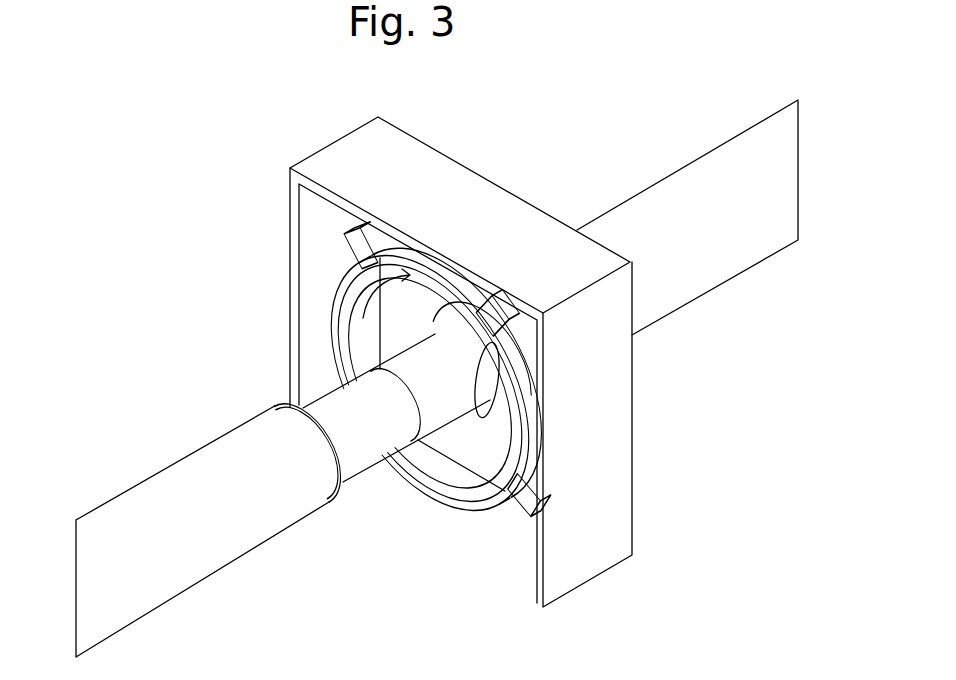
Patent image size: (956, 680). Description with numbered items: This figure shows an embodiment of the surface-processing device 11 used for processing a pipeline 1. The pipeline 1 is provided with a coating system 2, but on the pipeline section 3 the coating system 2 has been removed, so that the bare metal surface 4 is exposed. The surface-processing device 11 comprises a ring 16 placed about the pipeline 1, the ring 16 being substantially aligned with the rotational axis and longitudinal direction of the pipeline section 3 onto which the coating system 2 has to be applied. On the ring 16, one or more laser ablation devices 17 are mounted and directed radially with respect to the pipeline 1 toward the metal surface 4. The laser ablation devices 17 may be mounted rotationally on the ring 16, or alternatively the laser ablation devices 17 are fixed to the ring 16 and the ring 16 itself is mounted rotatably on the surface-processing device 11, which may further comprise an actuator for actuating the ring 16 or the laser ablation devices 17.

The pipeline 1 is at (155, 317).
The coating system 2 is at (173, 583).
The pipeline section 3 is at (396, 485).
The metal surface 4 is at (355, 467).
The surface-processing device 11 is at (357, 147).
The ring 16 is at (347, 345).
The laser ablation devices 17 is at (343, 263).